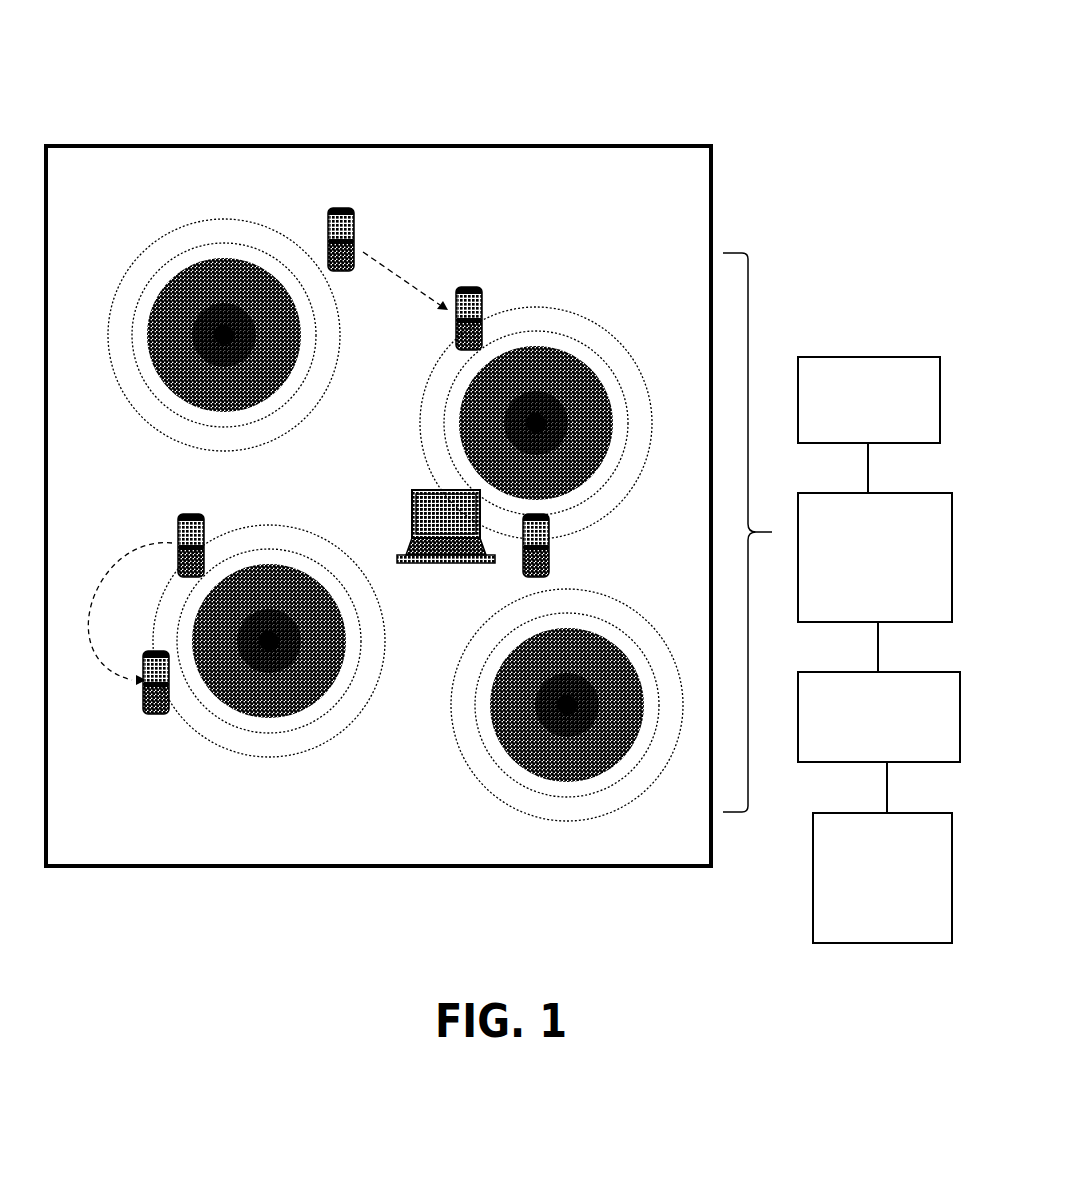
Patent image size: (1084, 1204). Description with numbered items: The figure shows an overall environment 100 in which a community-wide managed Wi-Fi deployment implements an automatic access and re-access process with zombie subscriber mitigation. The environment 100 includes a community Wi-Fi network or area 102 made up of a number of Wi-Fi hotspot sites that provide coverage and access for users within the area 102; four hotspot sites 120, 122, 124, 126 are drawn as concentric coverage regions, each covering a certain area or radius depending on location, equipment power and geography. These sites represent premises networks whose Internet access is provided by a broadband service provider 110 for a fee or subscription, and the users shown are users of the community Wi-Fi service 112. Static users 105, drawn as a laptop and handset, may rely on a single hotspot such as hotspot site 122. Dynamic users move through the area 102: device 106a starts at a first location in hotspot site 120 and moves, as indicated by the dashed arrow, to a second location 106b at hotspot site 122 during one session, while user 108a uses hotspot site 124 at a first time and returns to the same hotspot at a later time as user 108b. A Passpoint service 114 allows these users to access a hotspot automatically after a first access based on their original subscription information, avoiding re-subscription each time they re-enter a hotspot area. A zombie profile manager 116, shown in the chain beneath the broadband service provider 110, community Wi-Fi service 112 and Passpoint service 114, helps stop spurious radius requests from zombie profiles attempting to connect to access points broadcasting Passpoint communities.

The overall environment 100 is at (175, 62).
The community Wi-Fi network 102 is at (378, 506).
The static users 105 is at (473, 540).
The device 106a is at (388, 251).
The device 106b is at (494, 305).
The user 108a is at (146, 593).
The user at later time 108b is at (146, 694).
The broadband service provider 110 is at (869, 425).
The community Wi-Fi service 112 is at (875, 582).
The Passpoint service 114 is at (879, 742).
The zombie profile manager 116 is at (882, 878).
The hotspot site 120 is at (224, 335).
The hotspot site 122 is at (543, 423).
The hotspot site 124 is at (269, 648).
The hotspot site 126 is at (567, 713).